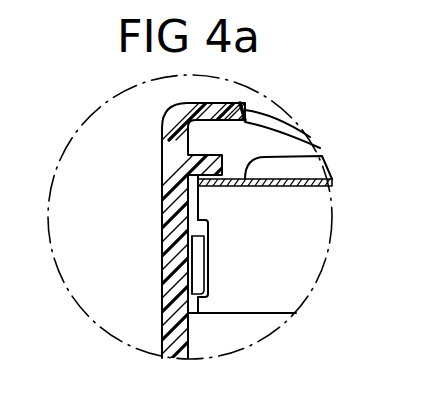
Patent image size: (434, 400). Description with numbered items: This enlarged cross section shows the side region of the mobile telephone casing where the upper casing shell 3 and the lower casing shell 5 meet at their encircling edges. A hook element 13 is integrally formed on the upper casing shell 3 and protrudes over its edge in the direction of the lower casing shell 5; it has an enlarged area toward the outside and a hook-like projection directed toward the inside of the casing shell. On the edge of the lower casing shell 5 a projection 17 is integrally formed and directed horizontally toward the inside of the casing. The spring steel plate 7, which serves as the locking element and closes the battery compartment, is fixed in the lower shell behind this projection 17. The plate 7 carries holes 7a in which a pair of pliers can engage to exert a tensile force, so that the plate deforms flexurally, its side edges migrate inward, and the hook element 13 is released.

The upper casing shell 3 is at (163, 117).
The lower casing shell 5 is at (168, 277).
The projection 17 is at (187, 203).
The hook element 13 is at (196, 252).
The spring steel plate 7 is at (320, 218).
The hole 7a is at (271, 246).